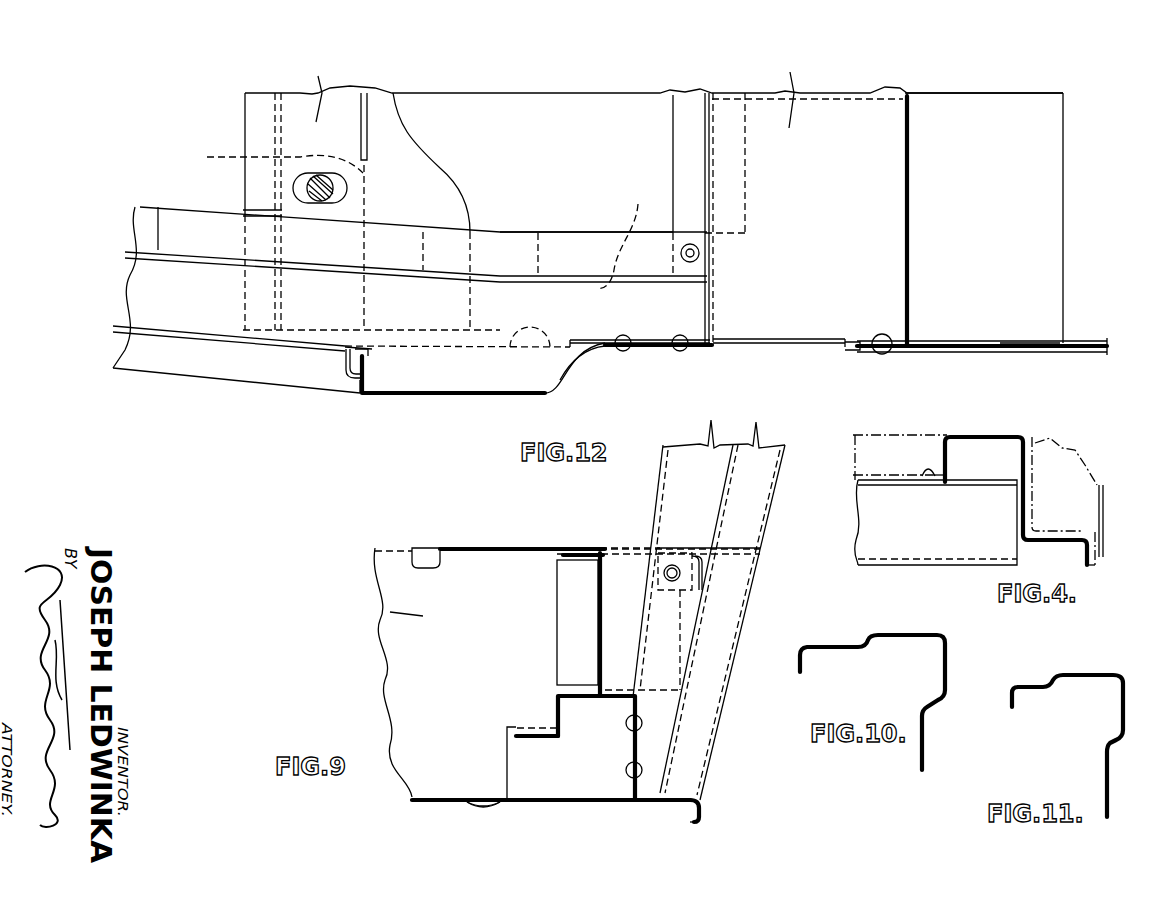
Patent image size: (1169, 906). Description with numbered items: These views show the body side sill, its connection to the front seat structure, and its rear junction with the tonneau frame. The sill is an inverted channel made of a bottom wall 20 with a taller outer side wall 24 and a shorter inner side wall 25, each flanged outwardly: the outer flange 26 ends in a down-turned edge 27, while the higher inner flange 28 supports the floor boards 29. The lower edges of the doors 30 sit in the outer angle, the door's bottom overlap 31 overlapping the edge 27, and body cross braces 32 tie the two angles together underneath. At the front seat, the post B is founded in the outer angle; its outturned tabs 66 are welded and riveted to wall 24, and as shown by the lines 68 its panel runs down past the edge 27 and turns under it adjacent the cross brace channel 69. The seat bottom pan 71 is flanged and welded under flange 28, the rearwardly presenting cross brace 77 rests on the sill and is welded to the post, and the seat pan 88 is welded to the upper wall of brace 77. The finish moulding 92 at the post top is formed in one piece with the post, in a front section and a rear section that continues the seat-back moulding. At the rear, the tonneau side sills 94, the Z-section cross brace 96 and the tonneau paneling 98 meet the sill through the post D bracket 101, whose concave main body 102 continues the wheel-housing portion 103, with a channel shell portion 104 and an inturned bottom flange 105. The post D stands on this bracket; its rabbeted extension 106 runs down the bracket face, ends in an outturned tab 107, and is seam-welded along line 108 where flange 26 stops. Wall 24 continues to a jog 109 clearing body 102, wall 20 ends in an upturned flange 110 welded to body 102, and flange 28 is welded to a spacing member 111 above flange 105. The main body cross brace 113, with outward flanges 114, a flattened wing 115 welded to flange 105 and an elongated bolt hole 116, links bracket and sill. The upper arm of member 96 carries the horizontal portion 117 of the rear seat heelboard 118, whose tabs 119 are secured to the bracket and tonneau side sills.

In FIG. 12, the bottom wall 20 is at (416, 281).
In FIG. 9, the bottom wall 20 is at (608, 694).
In FIG. 4, the bottom wall 20 is at (978, 437).
In FIG. 12, the outer side wall 24 is at (165, 333).
In FIG. 9, the outer side wall 24 is at (632, 742).
In FIG. 4, the outer side wall 24 is at (1028, 458).
In FIG. 12, the inner side wall 25 is at (393, 233).
In FIG. 9, the inner side wall 25 is at (557, 712).
In FIG. 4, the inner side wall 25 is at (947, 438).
In FIG. 12, the outer flange 26 is at (341, 359).
In FIG. 9, the outer flange 26 is at (672, 796).
In FIG. 4, the outer flange 26 is at (1055, 538).
In FIG. 9, the down-turned edge 27 is at (699, 808).
In FIG. 4, the down-turned edge 27 is at (1095, 558).
In FIG. 12, the inner flange 28 is at (410, 287).
In FIG. 9, the inner flange 28 is at (522, 725).
In FIG. 4, the inner flange 28 is at (928, 478).
In FIG. 4, the floor boards 29 is at (898, 437).
In FIG. 4, the doors 30 is at (1103, 500).
In FIG. 4, the bottom overlap 31 is at (1105, 547).
In FIG. 4, the body cross braces 32 is at (911, 555).
In FIG. 9, the outturned tabs 66 is at (641, 740).
In FIG. 9, the lines 68 is at (703, 819).
In FIG. 9, the cross brace channel 69 is at (688, 821).
In FIG. 9, the seat bottom pan 71 is at (443, 812).
In FIG. 9, the cross brace 77 is at (422, 691).
In FIG. 9, the seat pan 88 is at (492, 547).
In FIG. 10, the finish moulding 92 is at (800, 652).
In FIG. 11, the finish moulding 92 is at (1012, 688).
In FIG. 12, the tonneau side sills 94 is at (1003, 342).
In FIG. 12, the cross brace 96 is at (688, 157).
In FIG. 12, the tonneau paneling 98 is at (975, 356).
In FIG. 12, the post D bracket 101 is at (1023, 341).
In FIG. 12, the main body 102 is at (653, 345).
In FIG. 12, the wheel-housing portion 103 is at (875, 353).
In FIG. 12, the shell portion 104 is at (368, 376).
In FIG. 12, the inturned bottom flange 105 is at (215, 157).
In FIG. 12, the rabbeted extension 106 is at (344, 358).
In FIG. 12, the outturned tab 107 is at (310, 358).
In FIG. 12, the seam-weld line 108 is at (351, 382).
In FIG. 12, the jog 109 is at (587, 351).
In FIG. 12, the upturned flange 110 is at (656, 330).
In FIG. 12, the spacing member 111 is at (508, 245).
In FIG. 12, the main body cross brace 113 is at (337, 102).
In FIG. 12, the outward flanges 114 is at (258, 133).
In FIG. 12, the wing 115 is at (430, 203).
In FIG. 12, the elongated bolt hole 116 is at (292, 190).
In FIG. 12, the horizontal portion 117 is at (804, 219).
In FIG. 12, the rear seat heelboard 118 is at (911, 215).
In FIG. 12, the tabs 119 is at (805, 340).
In FIG. 9, the post B is at (752, 512).
In FIG. 12, the post D is at (347, 377).